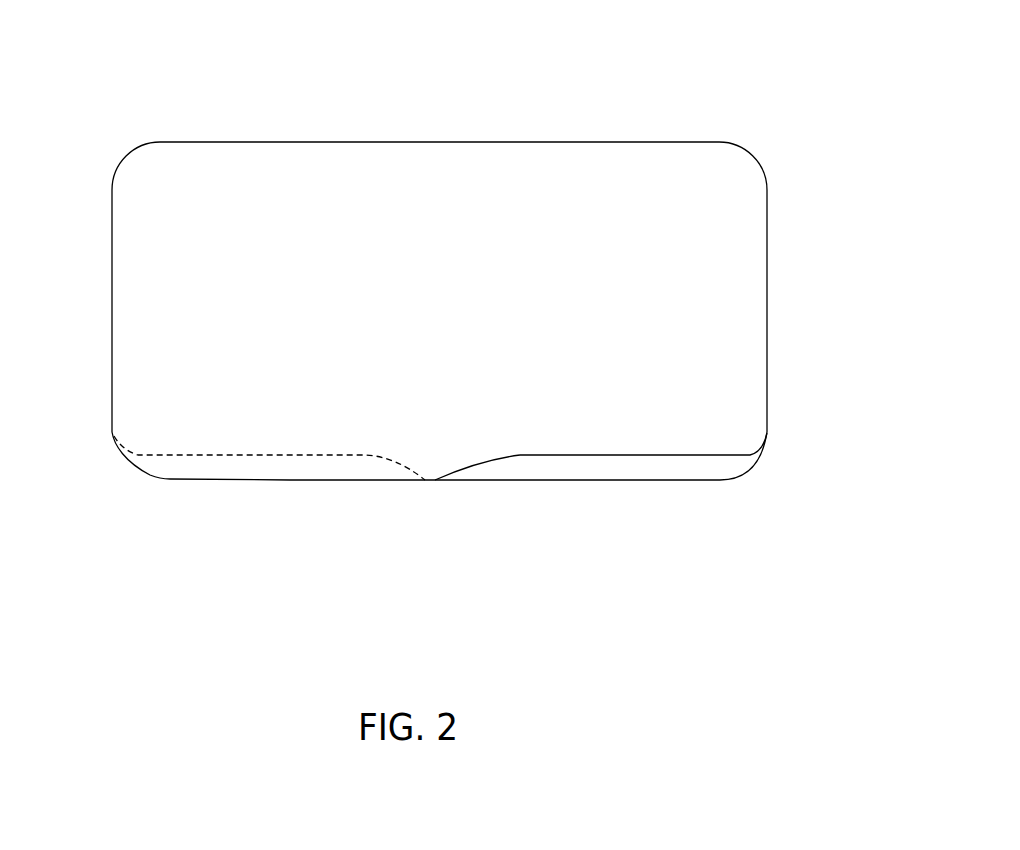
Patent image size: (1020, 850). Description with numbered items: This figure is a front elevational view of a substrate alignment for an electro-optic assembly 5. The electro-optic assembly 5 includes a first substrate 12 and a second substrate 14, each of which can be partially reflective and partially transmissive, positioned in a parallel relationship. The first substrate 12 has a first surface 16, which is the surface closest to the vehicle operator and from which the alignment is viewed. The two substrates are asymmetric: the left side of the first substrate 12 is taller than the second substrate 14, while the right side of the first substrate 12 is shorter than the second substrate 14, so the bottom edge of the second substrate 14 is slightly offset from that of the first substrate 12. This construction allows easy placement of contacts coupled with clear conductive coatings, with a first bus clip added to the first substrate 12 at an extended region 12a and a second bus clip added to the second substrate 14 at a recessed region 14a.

The electro-optic assembly 5 is at (763, 62).
The first substrate 12 is at (112, 313).
The extended region 12a is at (235, 480).
The second substrate 14 is at (640, 481).
The recessed region 14a is at (503, 481).
The first surface 16 is at (735, 237).